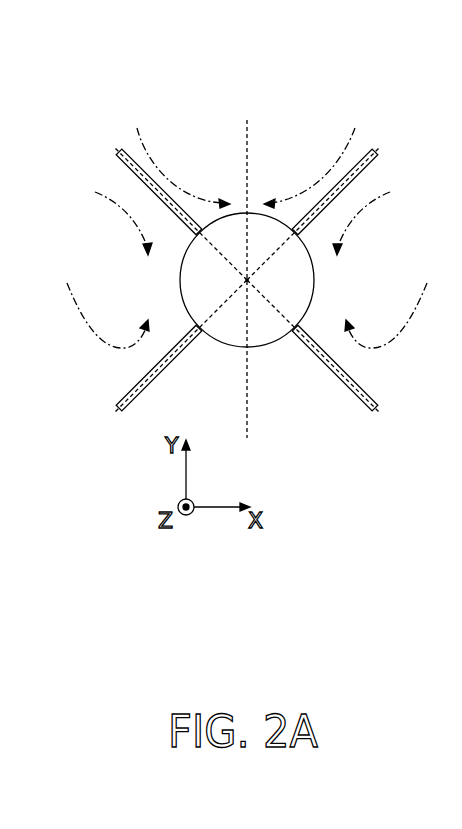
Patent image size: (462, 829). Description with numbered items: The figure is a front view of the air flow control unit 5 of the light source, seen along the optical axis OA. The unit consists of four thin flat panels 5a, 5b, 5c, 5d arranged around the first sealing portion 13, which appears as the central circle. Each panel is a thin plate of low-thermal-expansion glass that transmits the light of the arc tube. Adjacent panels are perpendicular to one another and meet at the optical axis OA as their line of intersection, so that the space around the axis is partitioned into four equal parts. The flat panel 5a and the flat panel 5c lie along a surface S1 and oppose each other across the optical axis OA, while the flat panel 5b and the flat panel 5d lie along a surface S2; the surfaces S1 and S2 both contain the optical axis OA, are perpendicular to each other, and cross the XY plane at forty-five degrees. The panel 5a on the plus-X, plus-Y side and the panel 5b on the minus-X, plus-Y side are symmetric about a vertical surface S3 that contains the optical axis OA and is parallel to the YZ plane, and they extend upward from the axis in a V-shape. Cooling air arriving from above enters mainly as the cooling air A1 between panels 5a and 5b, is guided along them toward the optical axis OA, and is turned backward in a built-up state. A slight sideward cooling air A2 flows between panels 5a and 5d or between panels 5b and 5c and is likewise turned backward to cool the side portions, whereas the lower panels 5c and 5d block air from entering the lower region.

The air flow control unit 5 is at (246, 241).
The flat panel 5a is at (364, 160).
The flat panel 5b is at (130, 163).
The flat panel 5c is at (135, 393).
The flat panel 5d is at (357, 390).
The first sealing portion 13 is at (180, 280).
The optical axis OA is at (247, 280).
The surface S1 is at (376, 144).
The surface S2 is at (118, 144).
The surface S3 is at (248, 383).
The cooling air A1 is at (152, 150).
The cooling air A2 is at (125, 214).